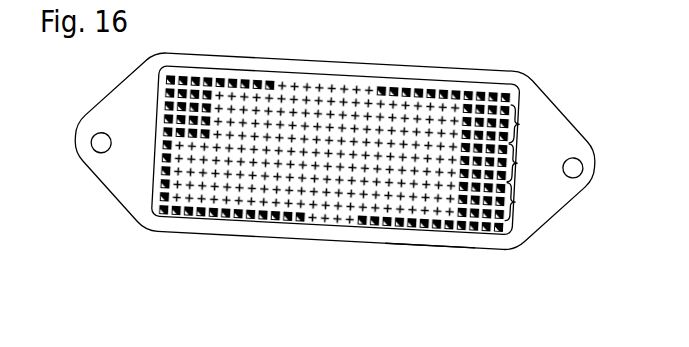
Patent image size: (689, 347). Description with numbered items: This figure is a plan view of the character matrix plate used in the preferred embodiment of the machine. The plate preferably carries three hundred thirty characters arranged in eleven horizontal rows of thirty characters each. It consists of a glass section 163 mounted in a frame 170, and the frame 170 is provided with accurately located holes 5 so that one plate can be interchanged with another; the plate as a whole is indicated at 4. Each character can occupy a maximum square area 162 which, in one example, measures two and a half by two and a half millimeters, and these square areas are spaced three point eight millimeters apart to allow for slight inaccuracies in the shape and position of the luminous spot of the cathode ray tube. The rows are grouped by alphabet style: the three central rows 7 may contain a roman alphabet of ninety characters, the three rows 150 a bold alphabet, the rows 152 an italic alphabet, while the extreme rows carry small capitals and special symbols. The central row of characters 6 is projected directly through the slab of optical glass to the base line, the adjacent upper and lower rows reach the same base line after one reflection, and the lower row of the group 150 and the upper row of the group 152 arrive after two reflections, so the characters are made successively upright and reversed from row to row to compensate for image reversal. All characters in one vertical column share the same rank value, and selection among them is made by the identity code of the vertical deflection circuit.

The mounting plate 4 is at (323, 61).
The holes 5 is at (97, 152).
The central row of characters 6 is at (155, 138).
The three central rows 7 is at (518, 163).
The three rows 150 is at (519, 125).
The rows 152 is at (516, 202).
The maximum square area 162 is at (169, 76).
The glass section 163 is at (489, 229).
The frame 170 is at (432, 241).